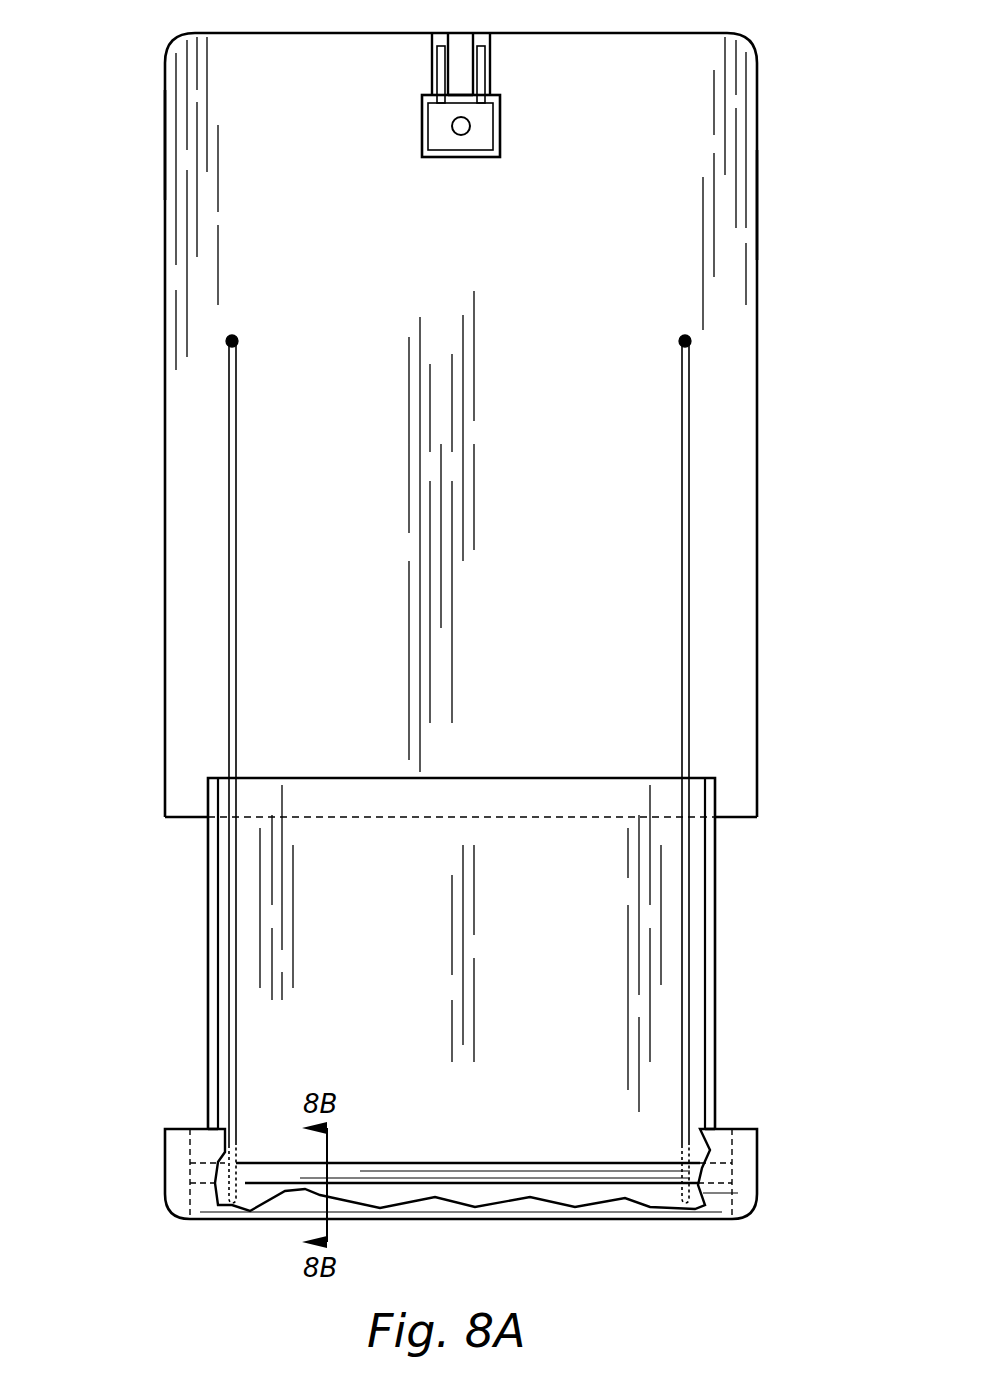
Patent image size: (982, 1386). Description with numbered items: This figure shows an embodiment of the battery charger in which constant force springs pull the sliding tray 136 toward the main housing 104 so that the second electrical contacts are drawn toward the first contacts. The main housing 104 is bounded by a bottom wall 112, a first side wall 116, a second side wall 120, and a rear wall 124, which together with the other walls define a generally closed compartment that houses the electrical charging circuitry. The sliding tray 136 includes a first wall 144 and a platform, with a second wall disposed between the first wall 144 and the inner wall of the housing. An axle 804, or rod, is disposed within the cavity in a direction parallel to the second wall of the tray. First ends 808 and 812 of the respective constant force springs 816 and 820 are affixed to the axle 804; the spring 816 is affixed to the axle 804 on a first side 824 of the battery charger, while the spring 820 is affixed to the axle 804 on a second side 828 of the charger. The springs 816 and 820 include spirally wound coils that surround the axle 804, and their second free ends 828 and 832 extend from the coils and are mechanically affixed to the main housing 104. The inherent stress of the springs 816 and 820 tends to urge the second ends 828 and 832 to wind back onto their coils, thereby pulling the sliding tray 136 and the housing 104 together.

The main housing 104 is at (138, 544).
The bottom wall 112 is at (481, 263).
The first side wall 116 is at (757, 211).
The second side wall 120 is at (165, 143).
The rear wall 124 is at (533, 33).
The sliding tray 136 is at (208, 1087).
The first wall 144 is at (450, 1219).
The axle 804 is at (395, 1163).
The first end of spring 816 808 is at (256, 1138).
The first end of spring 820 812 is at (618, 1138).
The constant force spring 816 is at (232, 904).
The constant force spring 820 is at (685, 905).
The first side 824 is at (180, 1016).
The second side / second free end 828 is at (238, 341).
The second free end 832 is at (680, 341).